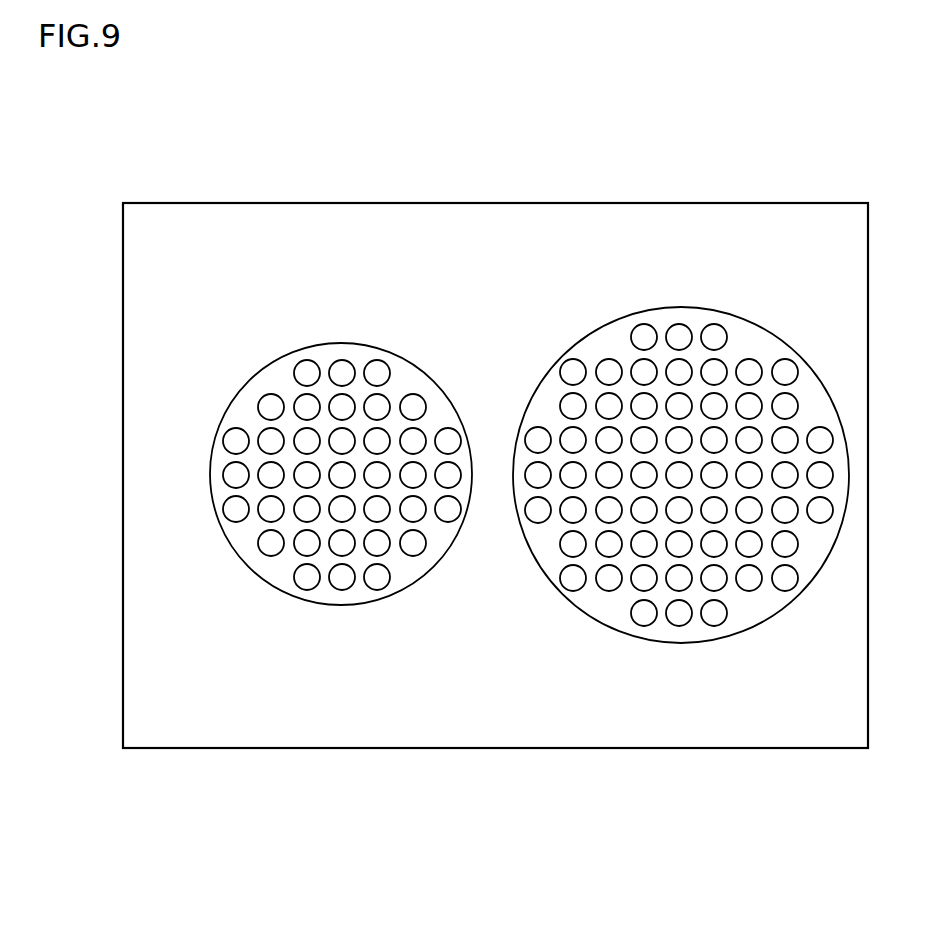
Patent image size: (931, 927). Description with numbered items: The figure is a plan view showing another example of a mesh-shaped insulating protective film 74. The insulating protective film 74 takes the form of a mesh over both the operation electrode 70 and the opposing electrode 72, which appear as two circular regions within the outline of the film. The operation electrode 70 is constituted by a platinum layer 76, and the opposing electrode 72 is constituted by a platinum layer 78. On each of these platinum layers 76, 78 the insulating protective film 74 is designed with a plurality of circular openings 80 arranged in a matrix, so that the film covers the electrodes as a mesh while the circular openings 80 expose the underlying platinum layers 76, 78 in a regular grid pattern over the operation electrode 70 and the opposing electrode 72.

The operation electrode 70 is at (681, 567).
The opposing electrode 72 is at (316, 362).
The insulating protective film 74 is at (460, 742).
The platinum layer 76 is at (752, 607).
The platinum layer 78 is at (273, 375).
The circular openings 80 is at (305, 368).